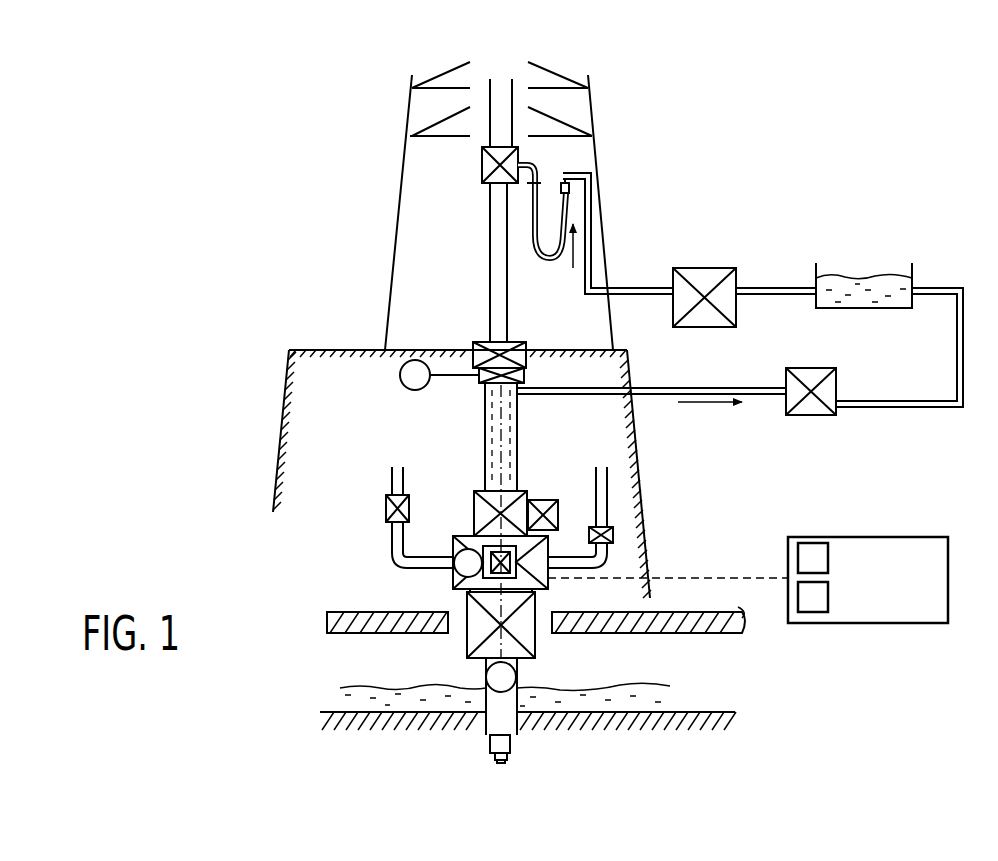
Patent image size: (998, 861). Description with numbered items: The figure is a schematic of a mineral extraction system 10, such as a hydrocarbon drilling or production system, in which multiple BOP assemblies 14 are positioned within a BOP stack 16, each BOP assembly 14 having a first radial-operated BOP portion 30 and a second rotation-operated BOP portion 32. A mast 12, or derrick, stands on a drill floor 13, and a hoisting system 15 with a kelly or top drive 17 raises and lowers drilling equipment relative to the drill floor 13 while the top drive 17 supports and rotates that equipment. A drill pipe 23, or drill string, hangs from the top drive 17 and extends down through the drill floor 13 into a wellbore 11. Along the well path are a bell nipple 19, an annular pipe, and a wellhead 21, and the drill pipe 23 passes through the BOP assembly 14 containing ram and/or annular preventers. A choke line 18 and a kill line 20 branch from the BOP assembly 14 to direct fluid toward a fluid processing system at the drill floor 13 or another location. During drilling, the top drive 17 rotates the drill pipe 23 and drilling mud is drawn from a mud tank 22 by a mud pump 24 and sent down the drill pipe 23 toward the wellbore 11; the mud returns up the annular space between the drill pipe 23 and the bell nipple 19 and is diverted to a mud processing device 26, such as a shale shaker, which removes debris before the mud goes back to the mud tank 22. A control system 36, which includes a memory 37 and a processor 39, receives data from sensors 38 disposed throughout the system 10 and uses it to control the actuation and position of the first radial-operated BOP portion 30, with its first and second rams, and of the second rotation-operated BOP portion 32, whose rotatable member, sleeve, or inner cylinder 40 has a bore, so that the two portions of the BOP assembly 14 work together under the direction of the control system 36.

The mineral extraction system 10 is at (732, 135).
The wellbore 11 is at (517, 732).
The mast 12 is at (589, 103).
The drill floor 13 is at (323, 349).
The BOP assembly 14 is at (536, 483).
The hoisting system 15 is at (478, 127).
The BOP stack 16 is at (482, 165).
The top drive 17 is at (527, 372).
The choke line 18 is at (408, 553).
The bell nipple 19 is at (517, 440).
The kill line 20 is at (607, 510).
The wellhead 21 is at (535, 642).
The mud tank 22 is at (913, 282).
The drill pipe 23 is at (490, 245).
The mud pump 24 is at (705, 268).
The mud processing device 26 is at (812, 368).
The first radial-operated BOP portion 30 is at (550, 578).
The second rotation-operated BOP portion 32 is at (533, 600).
The control system 36 is at (756, 583).
The memory 37 is at (796, 560).
The sensor 38 is at (402, 380).
The processor 39 is at (797, 598).
The inner cylinder 40 is at (560, 537).